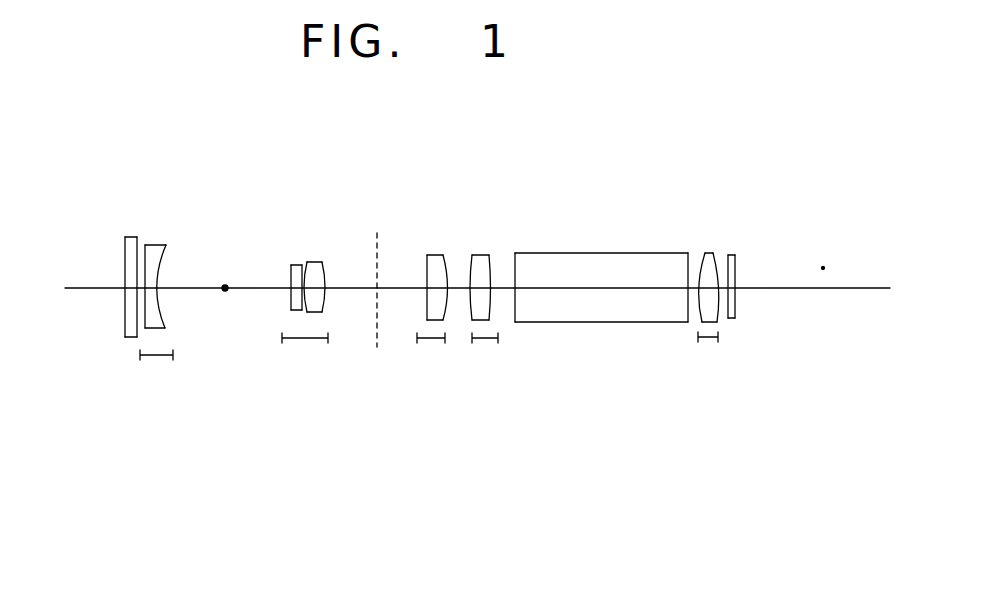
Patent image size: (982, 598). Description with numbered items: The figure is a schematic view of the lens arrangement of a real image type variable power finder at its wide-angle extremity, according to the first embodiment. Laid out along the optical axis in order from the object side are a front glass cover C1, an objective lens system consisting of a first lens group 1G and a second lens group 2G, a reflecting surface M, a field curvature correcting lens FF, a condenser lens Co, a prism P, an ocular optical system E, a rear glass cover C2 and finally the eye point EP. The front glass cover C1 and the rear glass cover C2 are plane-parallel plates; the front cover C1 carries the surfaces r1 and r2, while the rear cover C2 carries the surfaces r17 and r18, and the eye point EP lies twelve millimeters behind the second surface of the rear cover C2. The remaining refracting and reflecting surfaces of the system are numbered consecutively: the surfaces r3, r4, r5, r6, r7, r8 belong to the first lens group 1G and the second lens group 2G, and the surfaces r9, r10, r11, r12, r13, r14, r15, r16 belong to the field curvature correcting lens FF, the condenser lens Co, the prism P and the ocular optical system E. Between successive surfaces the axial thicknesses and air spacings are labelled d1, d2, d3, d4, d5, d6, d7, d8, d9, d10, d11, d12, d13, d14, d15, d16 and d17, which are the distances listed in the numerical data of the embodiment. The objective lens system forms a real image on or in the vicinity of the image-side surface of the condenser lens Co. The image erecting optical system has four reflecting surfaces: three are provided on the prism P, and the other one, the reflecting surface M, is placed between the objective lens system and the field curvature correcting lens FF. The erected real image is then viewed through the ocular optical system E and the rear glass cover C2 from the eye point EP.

The first lens group 1G is at (140, 356).
The second lens group 2G is at (309, 356).
The reflecting surface M is at (383, 230).
The field curvature correcting lens FF is at (434, 321).
The condenser lens Co is at (494, 321).
The prism P is at (605, 275).
The ocular optical system E is at (757, 322).
The front glass cover C1 is at (134, 268).
The rear glass cover C2 is at (732, 283).
The eye point EP is at (822, 278).
The surface r1 is at (127, 237).
The surface r2 is at (137, 237).
The surface r3 is at (145, 245).
The surface r4 is at (165, 247).
The surface r5 is at (292, 265).
The surface r6 is at (302, 265).
The surface r7 is at (307, 263).
The surface r8 is at (322, 263).
The surface r9 is at (428, 255).
The surface r10 is at (443, 255).
The surface r11 is at (473, 255).
The surface r12 is at (489, 255).
The surface r13 is at (515, 253).
The surface r14 is at (688, 253).
The surface r15 is at (705, 253).
The surface r16 is at (713, 253).
The surface r17 is at (728, 255).
The surface r18 is at (737, 255).
The distance d1 is at (131, 340).
The distance d2 is at (160, 355).
The distance d3 is at (173, 355).
The distance d4 is at (225, 288).
The distance d5 is at (297, 338).
The distance d6 is at (310, 312).
The distance d7 is at (322, 312).
The distance d8 is at (377, 288).
The distance d9 is at (439, 338).
The distance d10 is at (458, 288).
The distance d11 is at (481, 290).
The distance d12 is at (502, 288).
The distance d13 is at (602, 288).
The distance d14 is at (692, 288).
The distance d15 is at (720, 322).
The distance d16 is at (722, 290).
The distance d17 is at (733, 303).